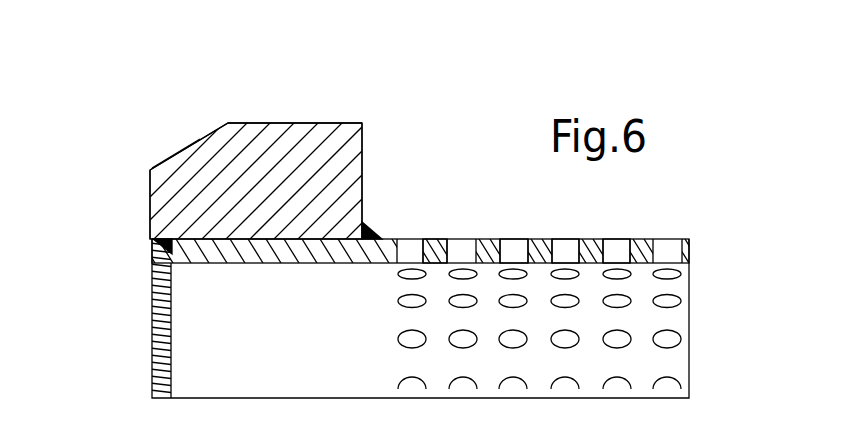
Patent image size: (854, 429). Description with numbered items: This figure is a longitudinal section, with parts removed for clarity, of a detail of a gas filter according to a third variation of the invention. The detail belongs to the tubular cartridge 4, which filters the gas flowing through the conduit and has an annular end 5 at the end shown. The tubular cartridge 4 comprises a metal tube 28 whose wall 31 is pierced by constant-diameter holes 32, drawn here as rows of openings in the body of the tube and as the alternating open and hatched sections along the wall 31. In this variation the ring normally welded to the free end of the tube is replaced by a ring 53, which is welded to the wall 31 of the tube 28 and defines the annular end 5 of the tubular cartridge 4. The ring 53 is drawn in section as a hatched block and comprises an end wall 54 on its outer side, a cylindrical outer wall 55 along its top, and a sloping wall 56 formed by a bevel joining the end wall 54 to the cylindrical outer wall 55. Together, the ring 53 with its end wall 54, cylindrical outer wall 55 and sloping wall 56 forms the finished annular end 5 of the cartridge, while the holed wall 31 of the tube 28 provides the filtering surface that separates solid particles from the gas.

The tubular cartridge 4 is at (703, 210).
The annular end 5 is at (390, 187).
The metal tube 28 is at (690, 232).
The wall 31 is at (433, 239).
The constant-diameter holes 32 is at (512, 250).
The ring 53 is at (309, 175).
The end wall 54 is at (150, 212).
The cylindrical outer wall 55 is at (297, 123).
The sloping wall 56 is at (192, 144).